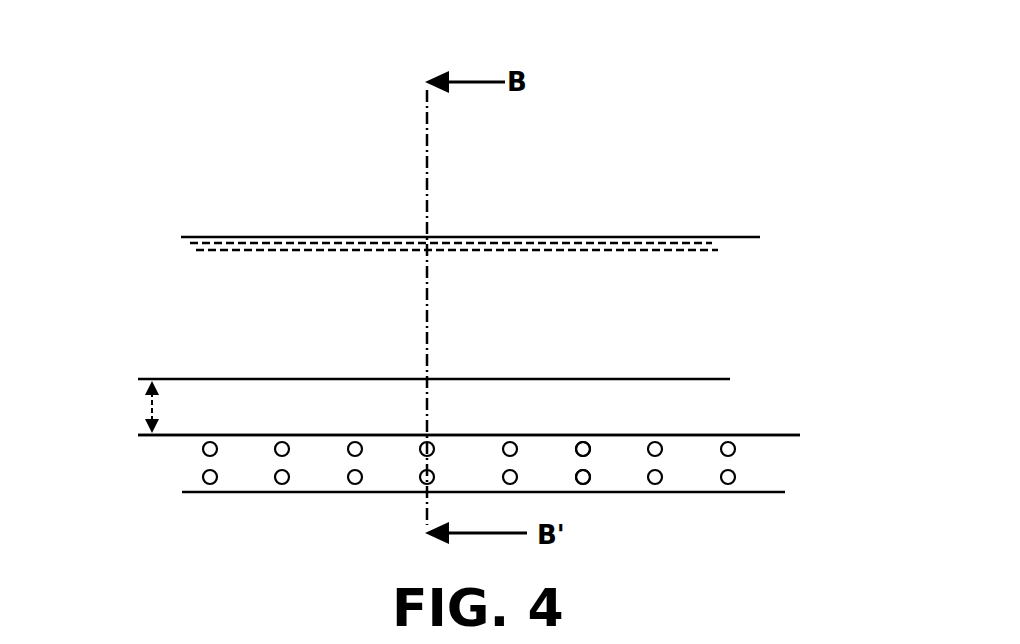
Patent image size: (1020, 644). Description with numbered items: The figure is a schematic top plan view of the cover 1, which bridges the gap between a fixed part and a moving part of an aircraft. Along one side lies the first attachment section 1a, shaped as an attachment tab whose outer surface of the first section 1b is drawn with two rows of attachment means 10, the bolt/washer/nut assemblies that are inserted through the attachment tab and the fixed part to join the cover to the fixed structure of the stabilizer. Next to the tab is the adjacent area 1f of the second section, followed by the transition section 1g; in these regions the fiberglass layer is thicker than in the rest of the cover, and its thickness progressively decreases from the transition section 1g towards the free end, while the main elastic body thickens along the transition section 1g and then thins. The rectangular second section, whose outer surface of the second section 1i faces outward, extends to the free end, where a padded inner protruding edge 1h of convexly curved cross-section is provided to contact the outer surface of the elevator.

The cover 1 is at (498, 346).
The first attachment section 1a is at (758, 462).
The outer surface of the first section 1b is at (585, 462).
The adjacent area of the second section to the first section 1f is at (129, 407).
The transition section 1g is at (757, 422).
The inner protruding edge 1h is at (225, 250).
The outer surface of the second section 1i is at (95, 319).
The attachment means for attaching the first section to the structural element 10 is at (355, 451).